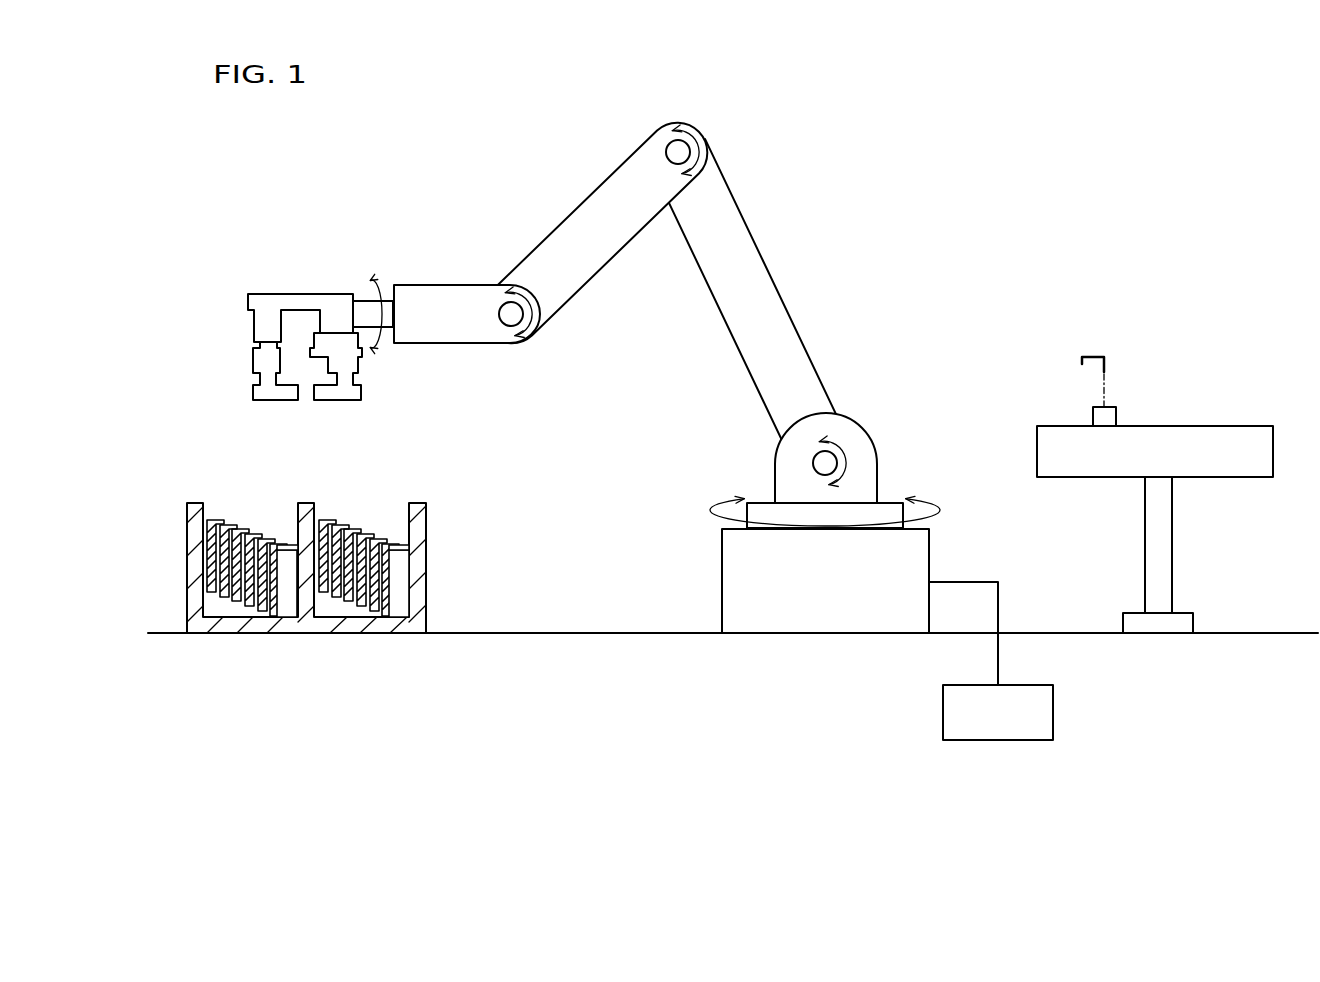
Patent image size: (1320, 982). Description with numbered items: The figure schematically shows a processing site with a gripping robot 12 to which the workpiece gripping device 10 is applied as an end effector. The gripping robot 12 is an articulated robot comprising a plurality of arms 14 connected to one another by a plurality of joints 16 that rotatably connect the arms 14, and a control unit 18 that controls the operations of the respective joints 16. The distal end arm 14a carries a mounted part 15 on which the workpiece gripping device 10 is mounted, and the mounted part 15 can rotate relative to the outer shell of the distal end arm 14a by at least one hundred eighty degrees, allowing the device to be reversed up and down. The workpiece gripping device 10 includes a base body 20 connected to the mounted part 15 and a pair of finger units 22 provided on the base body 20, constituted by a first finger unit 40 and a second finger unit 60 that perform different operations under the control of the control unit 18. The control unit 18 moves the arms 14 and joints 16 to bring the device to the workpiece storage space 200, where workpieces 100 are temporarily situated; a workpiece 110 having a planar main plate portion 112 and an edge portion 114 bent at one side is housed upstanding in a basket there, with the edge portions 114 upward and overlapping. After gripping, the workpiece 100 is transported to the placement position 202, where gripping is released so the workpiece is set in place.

The workpiece gripping device 10 is at (288, 282).
The gripping robot 12 is at (545, 178).
The arm 14 is at (632, 176).
The distal end arm 14a is at (450, 333).
The mounted part 15 is at (363, 310).
The joint 16 is at (668, 148).
The control unit 18 is at (1054, 712).
The base body 20 is at (257, 300).
The finger unit 22 is at (304, 389).
The first finger unit 40 is at (268, 398).
The second finger unit 60 is at (338, 398).
The workpiece 100 is at (1105, 357).
The workpiece 110 is at (352, 522).
The main plate portion 112 is at (285, 593).
The edge portion 114 is at (292, 547).
The workpiece storage space 200 is at (435, 553).
The placement position 202 is at (1032, 420).